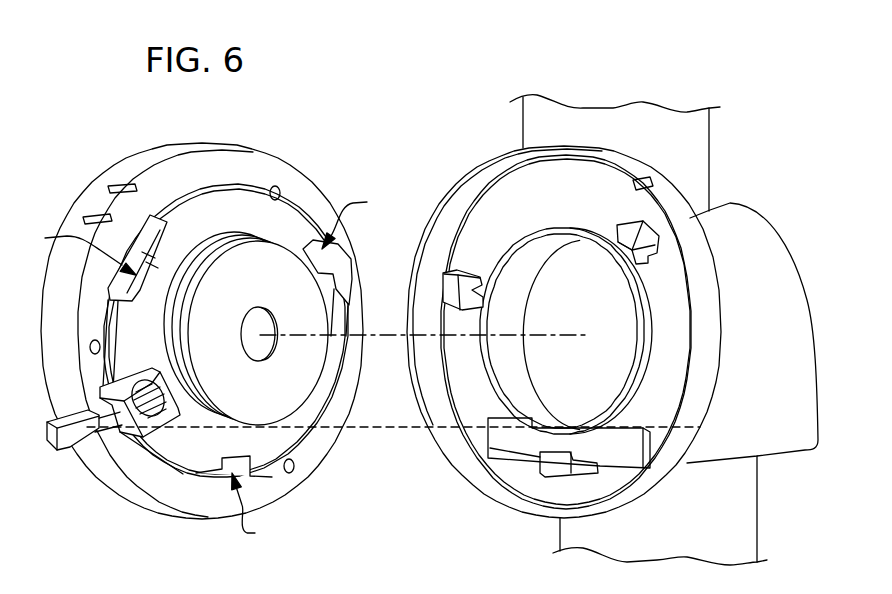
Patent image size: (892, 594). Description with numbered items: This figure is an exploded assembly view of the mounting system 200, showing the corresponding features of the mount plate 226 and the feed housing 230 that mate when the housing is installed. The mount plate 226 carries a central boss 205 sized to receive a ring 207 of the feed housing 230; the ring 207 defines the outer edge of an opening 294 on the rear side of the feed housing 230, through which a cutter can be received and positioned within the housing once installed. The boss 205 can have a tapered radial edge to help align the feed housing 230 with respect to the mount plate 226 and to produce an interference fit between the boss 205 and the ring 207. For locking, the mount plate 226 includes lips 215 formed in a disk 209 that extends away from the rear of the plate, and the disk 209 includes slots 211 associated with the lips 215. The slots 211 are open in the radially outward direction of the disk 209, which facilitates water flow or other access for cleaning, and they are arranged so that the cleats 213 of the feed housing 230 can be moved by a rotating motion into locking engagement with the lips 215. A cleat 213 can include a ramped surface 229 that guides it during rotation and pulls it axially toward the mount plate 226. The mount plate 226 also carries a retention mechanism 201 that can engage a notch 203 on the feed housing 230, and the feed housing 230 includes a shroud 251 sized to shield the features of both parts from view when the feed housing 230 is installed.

The mounting system 200 is at (462, 63).
The retention mechanism 201 is at (112, 462).
The notch 203 is at (652, 430).
The central boss 205 is at (272, 290).
The ring 207 is at (547, 257).
The disk 209 is at (243, 195).
The slots 211 is at (207, 368).
The cleats 213 is at (472, 273).
The lips 215 is at (147, 243).
The mount plate 226 is at (164, 158).
The ramped surface 229 is at (483, 312).
The feed housing 230 is at (750, 208).
The shroud 251 is at (705, 288).
The opening 294 is at (622, 343).